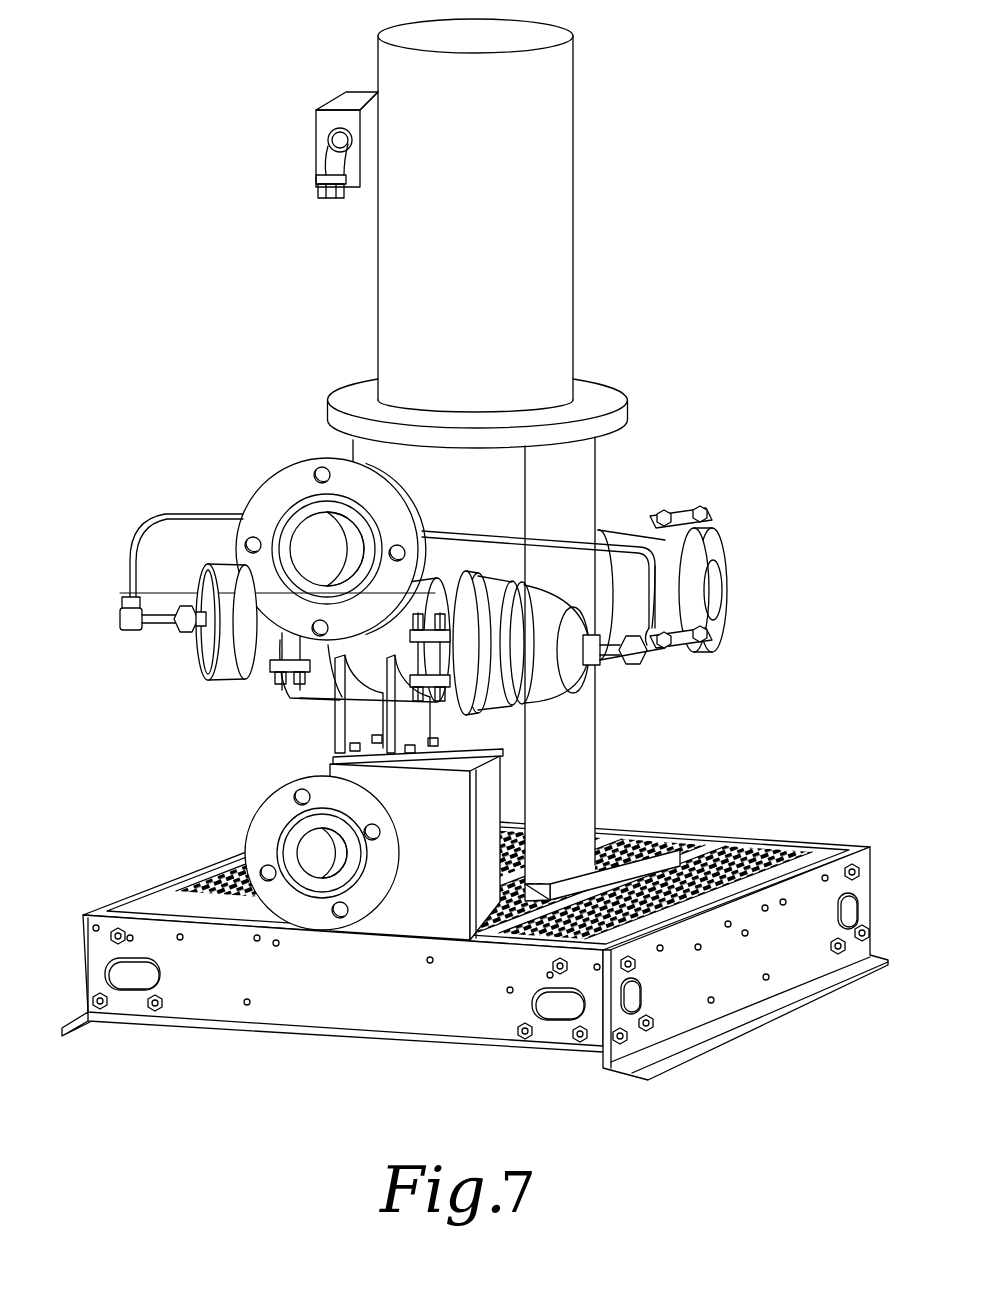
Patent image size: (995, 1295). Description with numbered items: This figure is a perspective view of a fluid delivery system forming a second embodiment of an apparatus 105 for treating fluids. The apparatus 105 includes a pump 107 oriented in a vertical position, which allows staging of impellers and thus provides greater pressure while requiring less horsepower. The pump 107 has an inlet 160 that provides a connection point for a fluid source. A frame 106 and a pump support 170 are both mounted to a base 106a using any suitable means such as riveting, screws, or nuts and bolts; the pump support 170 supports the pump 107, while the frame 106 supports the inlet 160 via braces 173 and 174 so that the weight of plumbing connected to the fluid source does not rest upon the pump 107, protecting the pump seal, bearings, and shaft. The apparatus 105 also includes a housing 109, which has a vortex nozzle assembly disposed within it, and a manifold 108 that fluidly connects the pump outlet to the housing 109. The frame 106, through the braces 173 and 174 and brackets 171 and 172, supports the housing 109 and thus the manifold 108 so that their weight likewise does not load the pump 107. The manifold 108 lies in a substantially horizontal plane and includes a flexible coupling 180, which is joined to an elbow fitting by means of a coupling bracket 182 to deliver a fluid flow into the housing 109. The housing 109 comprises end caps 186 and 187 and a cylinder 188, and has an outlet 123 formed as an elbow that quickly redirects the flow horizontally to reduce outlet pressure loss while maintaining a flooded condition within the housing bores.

The apparatus for treating fluids 105 is at (122, 519).
The frame 106 is at (846, 848).
The base 106a is at (745, 963).
The pump 107 is at (472, 233).
The manifold 108 is at (733, 560).
The housing 109 is at (302, 700).
The outlet 123 is at (285, 467).
The inlet 160 is at (263, 797).
The pump support 170 is at (516, 669).
The bracket 171 is at (353, 729).
The bracket 172 is at (413, 717).
The brace 173 is at (416, 844).
The brace 174 is at (487, 833).
The flexible coupling 180 is at (635, 605).
The coupling bracket 182 is at (725, 587).
The end cap 186 is at (192, 650).
The end cap 187 is at (557, 703).
The cylinder 188 is at (250, 668).